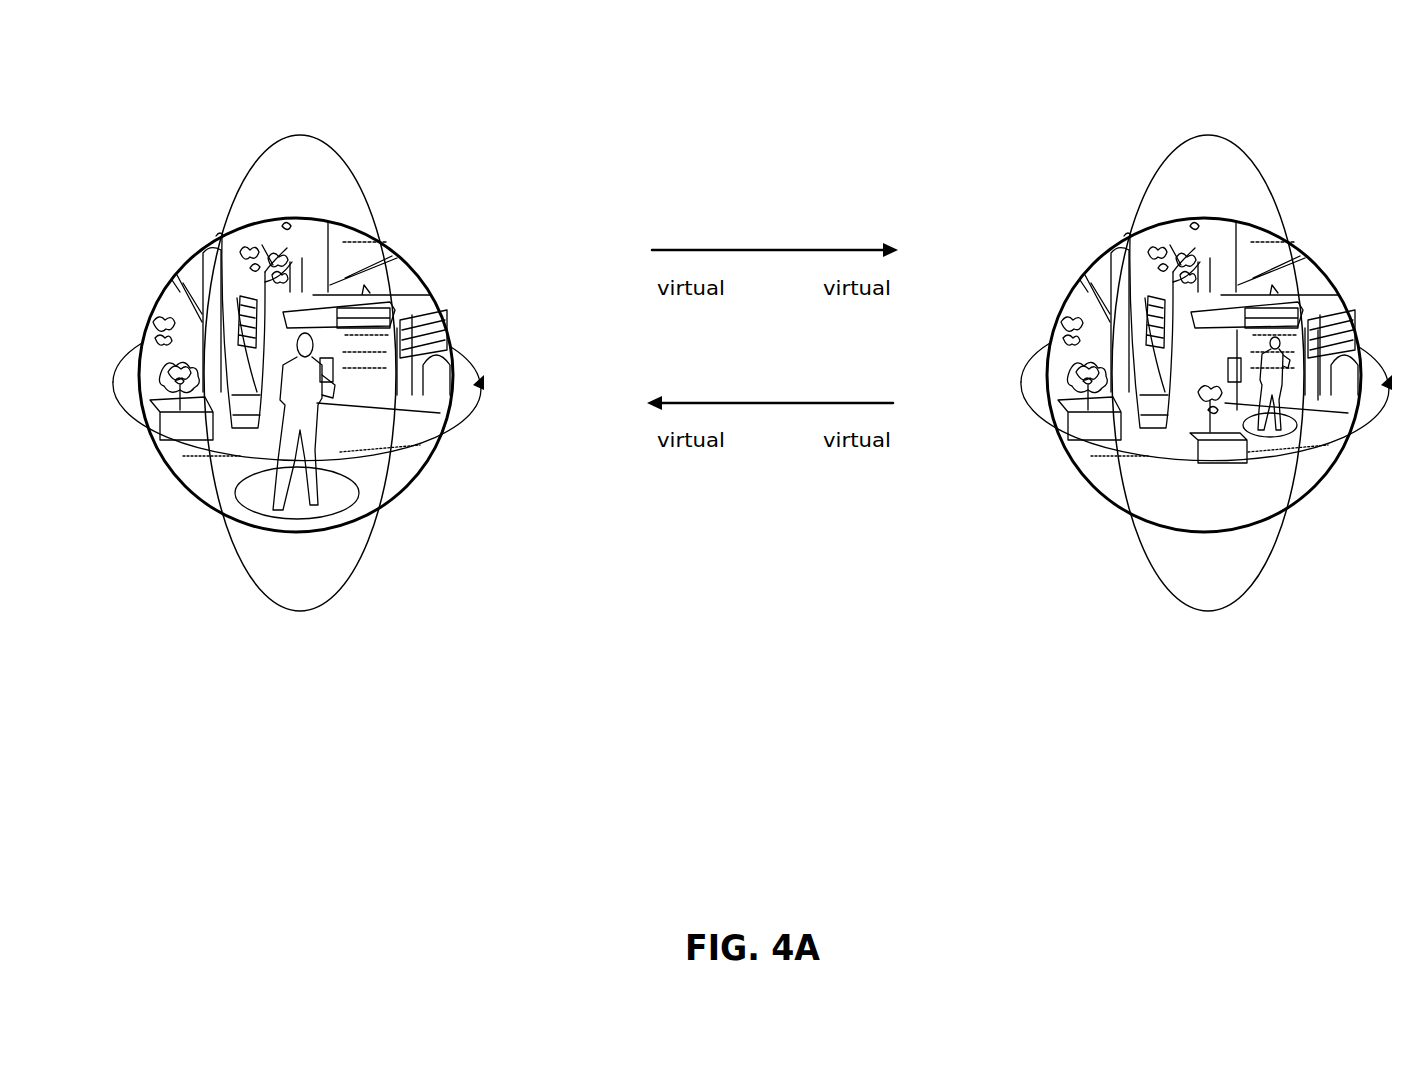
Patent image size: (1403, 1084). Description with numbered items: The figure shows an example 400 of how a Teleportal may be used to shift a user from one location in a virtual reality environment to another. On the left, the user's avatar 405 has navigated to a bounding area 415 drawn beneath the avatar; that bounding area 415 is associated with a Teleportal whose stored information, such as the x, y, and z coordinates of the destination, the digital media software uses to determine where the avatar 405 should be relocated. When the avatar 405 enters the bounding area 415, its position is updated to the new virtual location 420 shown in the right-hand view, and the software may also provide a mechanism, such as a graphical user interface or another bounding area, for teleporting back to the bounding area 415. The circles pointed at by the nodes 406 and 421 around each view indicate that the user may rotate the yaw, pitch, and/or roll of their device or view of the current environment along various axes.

The example 400 is at (212, 90).
The avatar 405 is at (291, 385).
The node 406 is at (220, 566).
The bounding area 415 is at (345, 490).
The new virtual location 420 is at (1291, 450).
The node 421 is at (1125, 566).